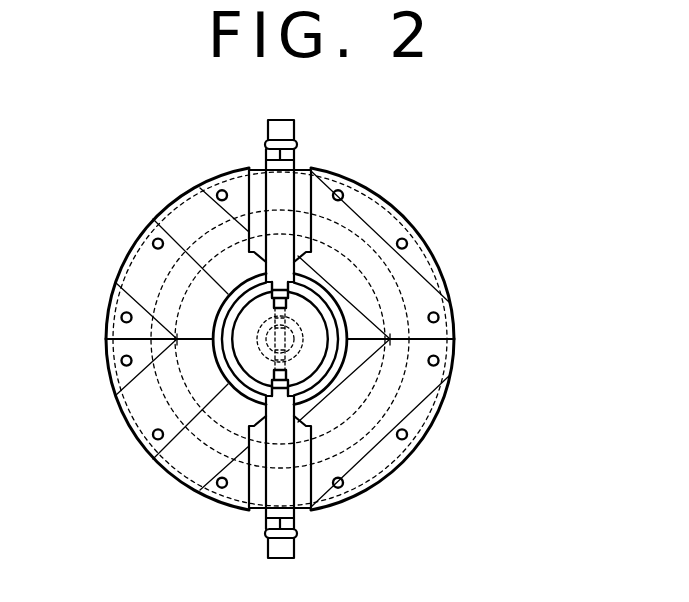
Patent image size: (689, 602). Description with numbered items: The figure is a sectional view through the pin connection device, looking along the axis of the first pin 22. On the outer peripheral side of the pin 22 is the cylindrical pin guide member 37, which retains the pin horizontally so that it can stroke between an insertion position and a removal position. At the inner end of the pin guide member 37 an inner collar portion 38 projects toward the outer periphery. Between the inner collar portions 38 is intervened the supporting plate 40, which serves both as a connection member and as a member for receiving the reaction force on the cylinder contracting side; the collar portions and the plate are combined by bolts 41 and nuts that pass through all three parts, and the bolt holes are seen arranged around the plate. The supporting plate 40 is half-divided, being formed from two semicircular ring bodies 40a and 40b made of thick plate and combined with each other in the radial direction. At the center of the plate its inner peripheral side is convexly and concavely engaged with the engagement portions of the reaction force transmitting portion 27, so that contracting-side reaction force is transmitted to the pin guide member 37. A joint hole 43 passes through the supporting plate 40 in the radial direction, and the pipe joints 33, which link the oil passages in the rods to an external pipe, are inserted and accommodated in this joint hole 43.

The first pin 22 is at (420, 405).
The reaction force transmitting portion 27 is at (214, 363).
The pipe joint 33 is at (267, 123).
The pin guide member 37 is at (163, 277).
The inner collar portion 38 is at (168, 200).
The supporting plate 40 is at (356, 339).
The ring body 40a is at (452, 285).
The ring body 40b is at (328, 424).
The bolt 41 is at (404, 237).
The joint hole 43 is at (300, 198).